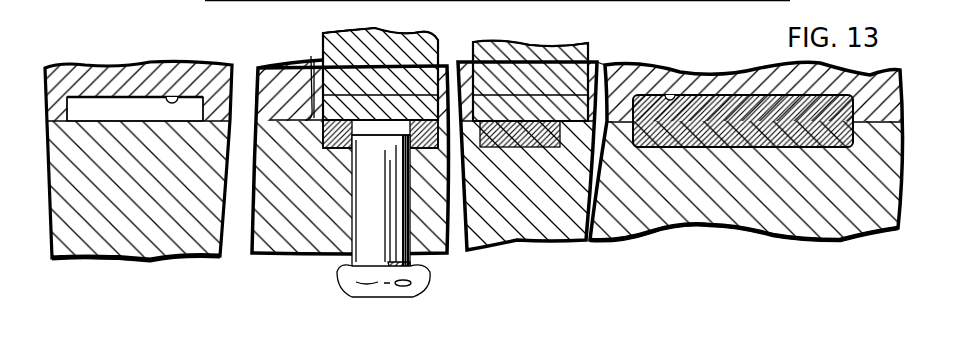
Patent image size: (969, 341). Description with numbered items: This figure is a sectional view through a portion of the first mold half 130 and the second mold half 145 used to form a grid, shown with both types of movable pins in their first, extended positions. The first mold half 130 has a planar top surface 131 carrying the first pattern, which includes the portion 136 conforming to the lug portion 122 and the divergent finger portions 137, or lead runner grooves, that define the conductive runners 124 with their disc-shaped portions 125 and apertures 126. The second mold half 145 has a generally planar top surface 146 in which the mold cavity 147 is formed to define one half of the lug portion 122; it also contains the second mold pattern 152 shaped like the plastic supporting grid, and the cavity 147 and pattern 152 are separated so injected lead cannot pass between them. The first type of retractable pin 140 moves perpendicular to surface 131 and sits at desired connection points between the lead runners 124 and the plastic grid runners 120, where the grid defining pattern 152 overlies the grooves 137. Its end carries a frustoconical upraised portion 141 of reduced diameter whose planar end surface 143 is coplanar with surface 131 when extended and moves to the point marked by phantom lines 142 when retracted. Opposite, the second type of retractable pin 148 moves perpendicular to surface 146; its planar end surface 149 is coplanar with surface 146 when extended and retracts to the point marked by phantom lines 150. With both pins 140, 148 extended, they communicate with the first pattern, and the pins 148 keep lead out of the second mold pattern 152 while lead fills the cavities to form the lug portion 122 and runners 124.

The plastic grid runner 120 is at (612, 332).
The lug portion 122 is at (720, 147).
The conductive runner 124 is at (525, 126).
The disc-shaped portion 125 is at (312, 128).
The aperture 126 is at (413, 268).
The first mold half 130 is at (474, 154).
The planar top surface 131 is at (333, 172).
The portion conforming to the lug portion 136 is at (793, 138).
The divergent finger portion 137 is at (444, 152).
The first type of retractable pin 140 is at (345, 266).
The frustoconical upraised portion 141 is at (433, 62).
The phantom lines 142 is at (336, 231).
The planar end surface 143 is at (390, 150).
The second mold half 145 is at (175, 68).
The planar top surface 146 is at (311, 56).
The mold cavity 147 is at (672, 92).
The second type of retractable pin 148 is at (530, 37).
The planar end surface 149 is at (577, 32).
The phantom lines 150 is at (603, 52).
The second mold pattern 152 is at (180, 92).